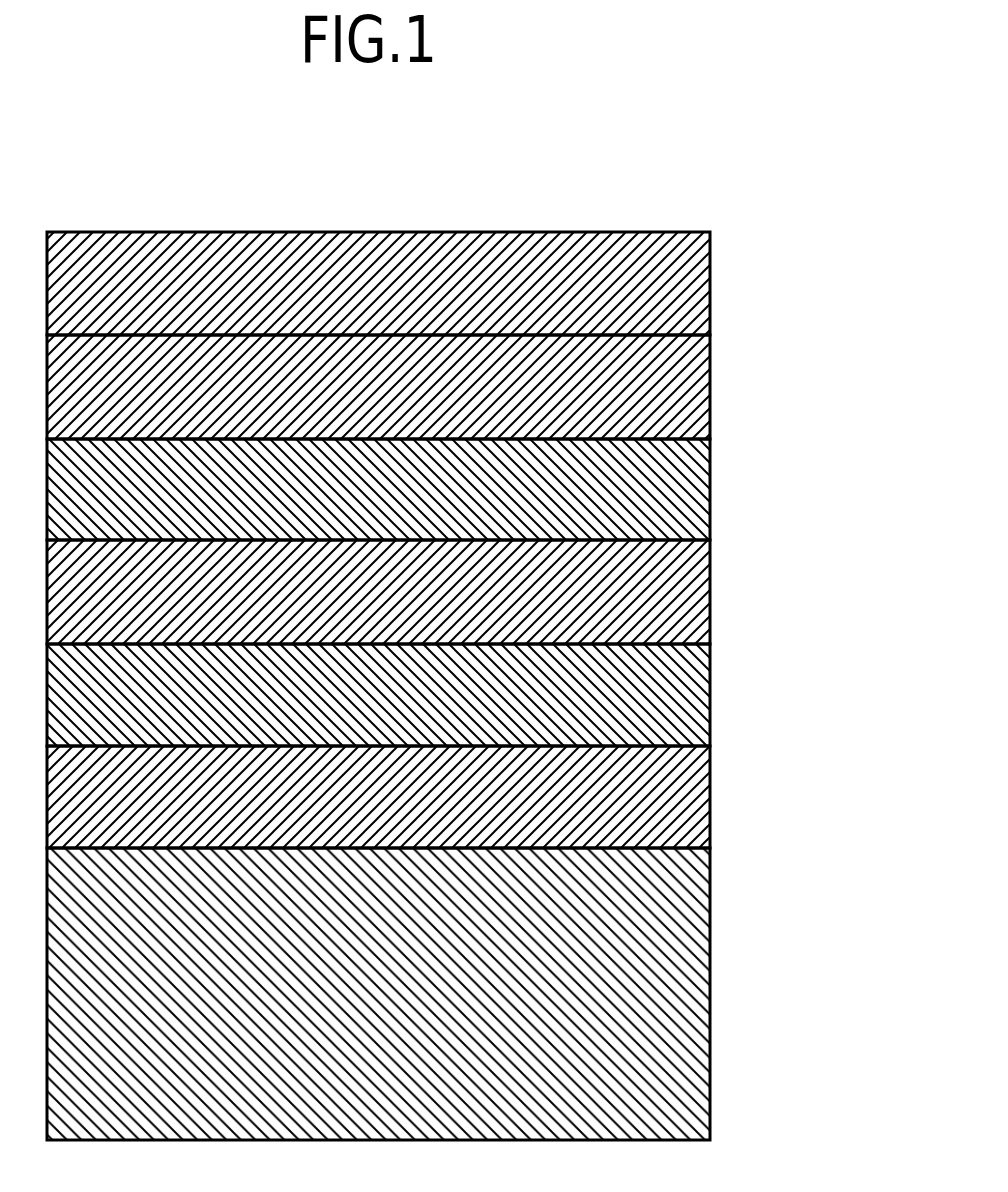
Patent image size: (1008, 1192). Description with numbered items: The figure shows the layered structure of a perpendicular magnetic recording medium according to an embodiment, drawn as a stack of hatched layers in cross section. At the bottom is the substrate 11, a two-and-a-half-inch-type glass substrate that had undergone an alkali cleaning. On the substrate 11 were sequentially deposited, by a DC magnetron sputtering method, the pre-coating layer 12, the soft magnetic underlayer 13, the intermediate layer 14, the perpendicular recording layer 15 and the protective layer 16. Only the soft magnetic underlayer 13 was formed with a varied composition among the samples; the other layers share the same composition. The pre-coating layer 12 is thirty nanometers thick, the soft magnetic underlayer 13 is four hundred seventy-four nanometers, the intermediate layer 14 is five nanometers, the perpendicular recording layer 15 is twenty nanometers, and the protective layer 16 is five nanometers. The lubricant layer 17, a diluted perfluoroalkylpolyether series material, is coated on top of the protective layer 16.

The substrate 11 is at (675, 993).
The pre-coating layer 12 is at (675, 790).
The soft magnetic underlayer 13 is at (675, 690).
The intermediate layer 14 is at (675, 590).
The perpendicular recording layer 15 is at (675, 488).
The protective layer 16 is at (675, 385).
The lubricant layer 17 is at (675, 282).